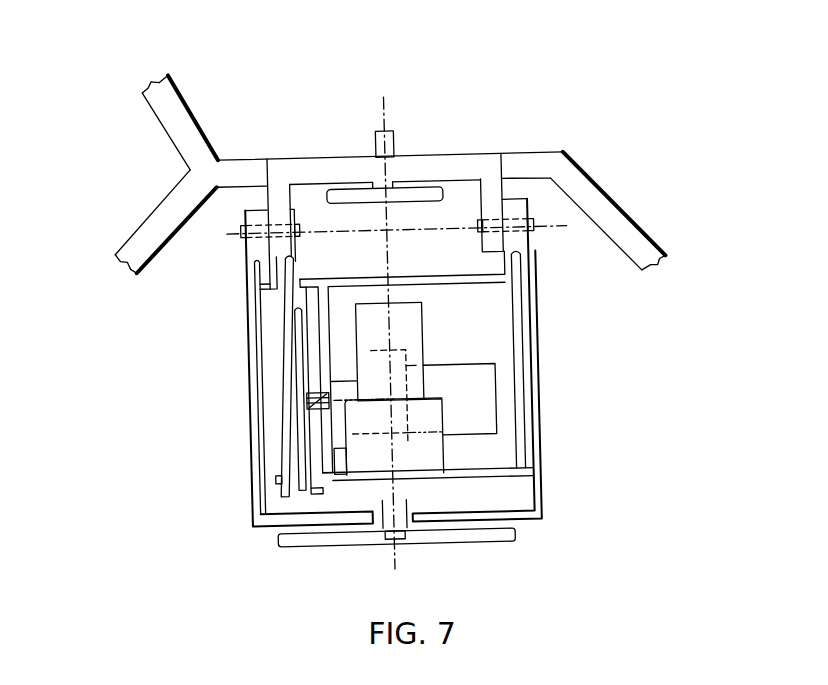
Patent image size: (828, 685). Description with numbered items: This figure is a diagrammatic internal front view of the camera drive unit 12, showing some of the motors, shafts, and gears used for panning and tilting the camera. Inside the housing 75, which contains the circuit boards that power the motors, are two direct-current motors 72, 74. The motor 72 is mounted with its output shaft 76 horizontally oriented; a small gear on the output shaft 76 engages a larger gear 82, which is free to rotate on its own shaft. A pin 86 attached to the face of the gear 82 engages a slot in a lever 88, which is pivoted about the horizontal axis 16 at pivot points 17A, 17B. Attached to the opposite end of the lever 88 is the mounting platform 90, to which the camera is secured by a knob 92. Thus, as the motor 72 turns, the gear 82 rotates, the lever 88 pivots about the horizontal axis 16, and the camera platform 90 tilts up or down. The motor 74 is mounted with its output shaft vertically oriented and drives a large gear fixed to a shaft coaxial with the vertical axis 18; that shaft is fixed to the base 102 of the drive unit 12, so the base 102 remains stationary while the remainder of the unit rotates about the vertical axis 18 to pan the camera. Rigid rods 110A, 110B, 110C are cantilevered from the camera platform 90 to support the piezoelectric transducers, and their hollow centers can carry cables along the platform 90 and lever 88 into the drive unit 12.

The drive unit 12 is at (240, 381).
The horizontal axis 16 is at (548, 237).
The pivot pin 17A is at (295, 234).
The pivot pin 17B is at (480, 242).
The vertical axis 18 is at (388, 116).
The motor 72 is at (460, 375).
The motor 74 is at (423, 328).
The housing 75 is at (534, 432).
The output shaft 76 is at (326, 390).
The gear 82 is at (307, 493).
The pin 86 is at (268, 477).
The lever 88 is at (281, 437).
The mounting platform 90 is at (472, 163).
The knob 92 is at (346, 199).
The base 102 is at (296, 542).
The rigid rod 110A is at (159, 207).
The rigid rod 110B is at (630, 239).
The rigid rod 110C is at (191, 130).